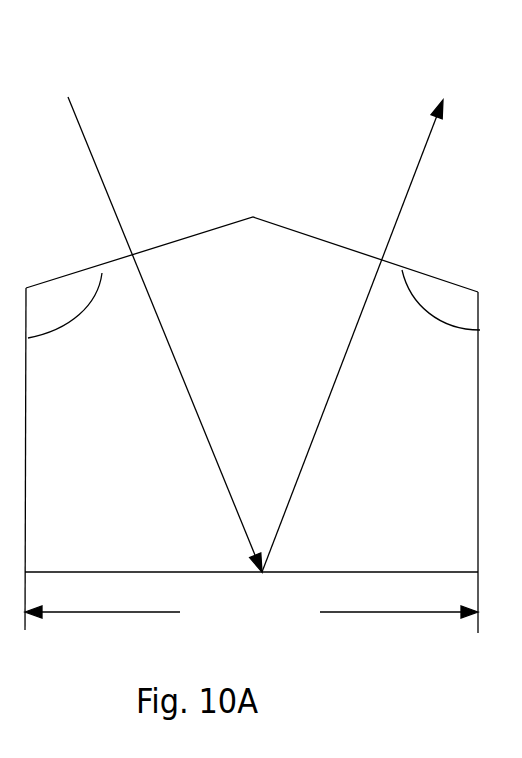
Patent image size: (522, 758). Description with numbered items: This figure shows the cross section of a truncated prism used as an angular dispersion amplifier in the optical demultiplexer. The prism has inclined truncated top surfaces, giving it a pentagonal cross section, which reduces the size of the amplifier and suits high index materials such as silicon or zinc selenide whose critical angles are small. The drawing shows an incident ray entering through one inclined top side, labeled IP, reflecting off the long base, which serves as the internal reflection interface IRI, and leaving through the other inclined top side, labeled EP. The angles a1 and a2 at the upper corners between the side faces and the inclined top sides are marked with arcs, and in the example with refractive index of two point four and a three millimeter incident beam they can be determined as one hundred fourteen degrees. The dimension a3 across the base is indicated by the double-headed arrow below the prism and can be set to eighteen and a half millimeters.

The incident plane IP is at (33, 439).
The exit plane EP is at (474, 442).
The angle a1 is at (71, 314).
The angle a2 is at (438, 314).
The dimension a3 is at (251, 619).
The internal reflection interface IRI is at (251, 550).